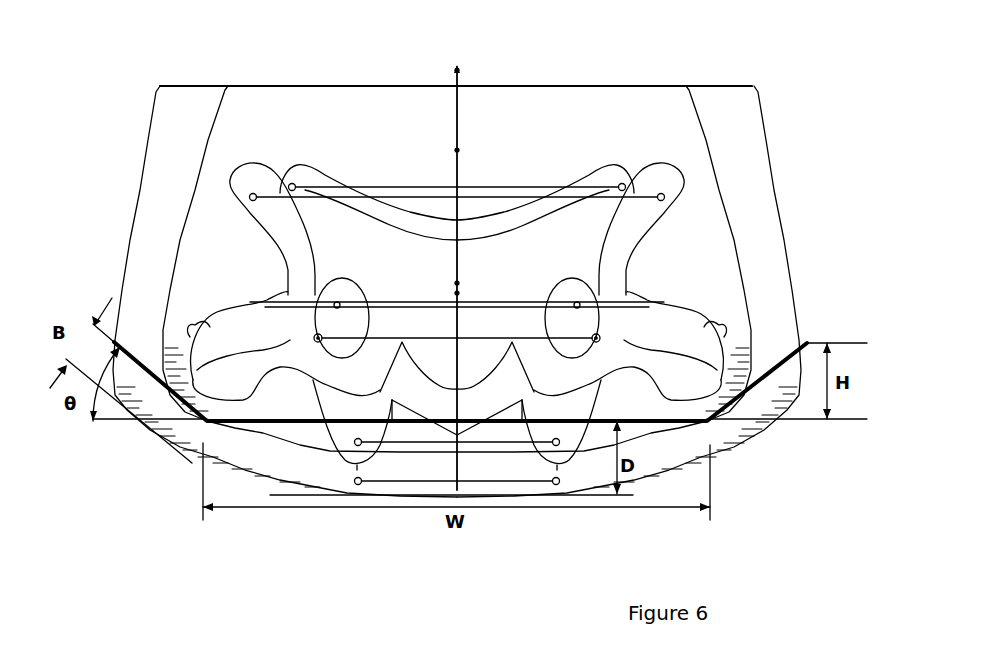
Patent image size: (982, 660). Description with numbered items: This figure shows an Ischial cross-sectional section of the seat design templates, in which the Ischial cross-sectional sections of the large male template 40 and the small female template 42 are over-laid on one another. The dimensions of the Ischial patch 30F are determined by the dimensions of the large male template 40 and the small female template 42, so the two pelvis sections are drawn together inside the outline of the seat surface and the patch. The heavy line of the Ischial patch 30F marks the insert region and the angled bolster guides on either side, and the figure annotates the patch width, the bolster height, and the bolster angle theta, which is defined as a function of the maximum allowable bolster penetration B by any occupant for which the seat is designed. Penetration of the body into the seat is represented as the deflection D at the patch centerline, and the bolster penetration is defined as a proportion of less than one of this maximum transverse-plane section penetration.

The large male template 40 is at (706, 135).
The small female template 42 is at (755, 88).
The Ischial patch 30F is at (160, 445).